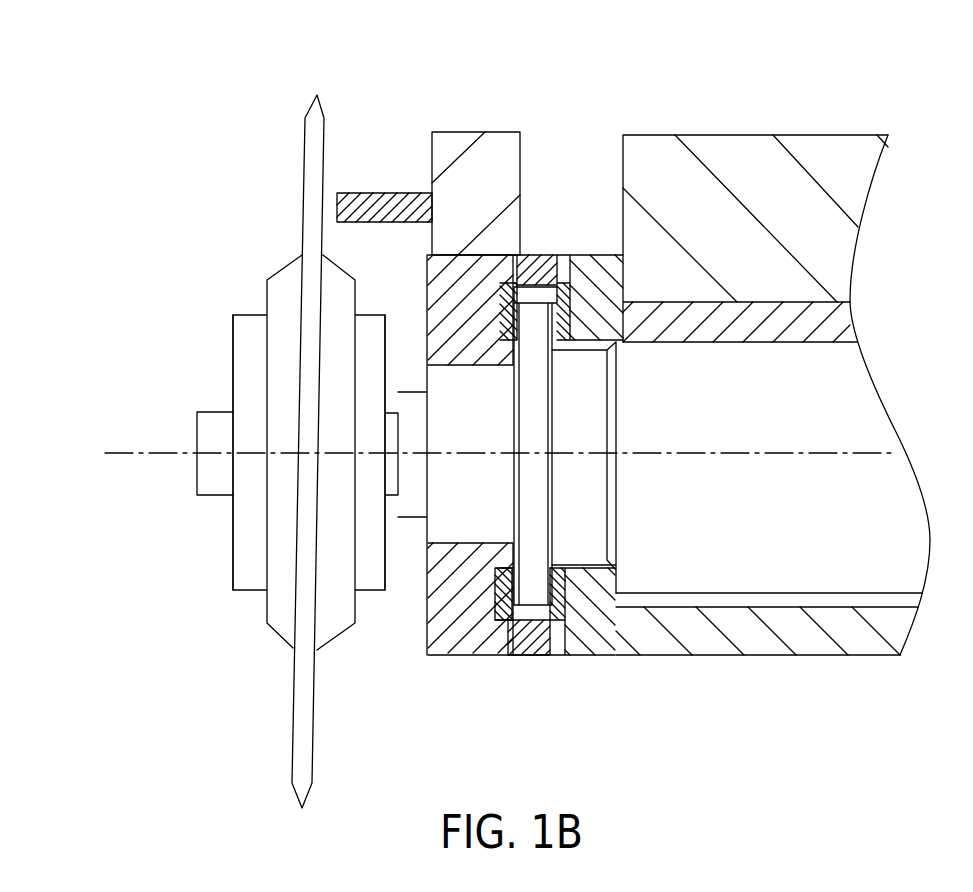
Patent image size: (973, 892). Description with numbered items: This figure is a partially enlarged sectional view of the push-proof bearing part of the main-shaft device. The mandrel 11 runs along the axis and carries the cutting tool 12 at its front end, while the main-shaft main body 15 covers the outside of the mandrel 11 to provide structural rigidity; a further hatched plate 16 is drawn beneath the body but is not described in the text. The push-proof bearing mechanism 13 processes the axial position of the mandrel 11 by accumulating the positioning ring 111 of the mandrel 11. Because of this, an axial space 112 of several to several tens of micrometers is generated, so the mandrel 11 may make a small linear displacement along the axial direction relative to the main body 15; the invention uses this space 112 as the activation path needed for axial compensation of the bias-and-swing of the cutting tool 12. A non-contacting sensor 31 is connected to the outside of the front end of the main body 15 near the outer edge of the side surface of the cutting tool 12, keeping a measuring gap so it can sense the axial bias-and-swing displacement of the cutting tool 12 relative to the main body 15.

The mandrel 11 is at (713, 575).
The positioning ring 111 is at (530, 597).
The axial space 112 is at (508, 595).
The cutting tool 12 is at (317, 143).
The push-proof bearing mechanism 13 is at (593, 267).
The main-shaft main body 15 is at (662, 157).
The base plate 16 is at (813, 603).
The sensor 31 is at (382, 193).